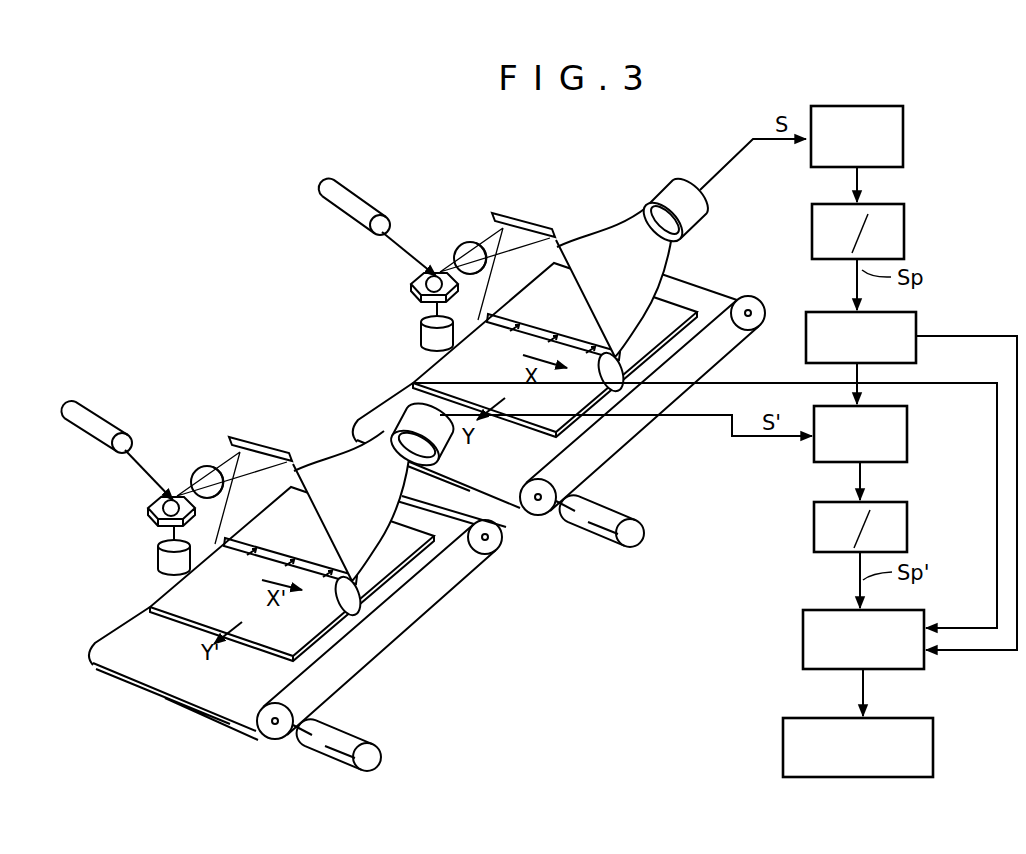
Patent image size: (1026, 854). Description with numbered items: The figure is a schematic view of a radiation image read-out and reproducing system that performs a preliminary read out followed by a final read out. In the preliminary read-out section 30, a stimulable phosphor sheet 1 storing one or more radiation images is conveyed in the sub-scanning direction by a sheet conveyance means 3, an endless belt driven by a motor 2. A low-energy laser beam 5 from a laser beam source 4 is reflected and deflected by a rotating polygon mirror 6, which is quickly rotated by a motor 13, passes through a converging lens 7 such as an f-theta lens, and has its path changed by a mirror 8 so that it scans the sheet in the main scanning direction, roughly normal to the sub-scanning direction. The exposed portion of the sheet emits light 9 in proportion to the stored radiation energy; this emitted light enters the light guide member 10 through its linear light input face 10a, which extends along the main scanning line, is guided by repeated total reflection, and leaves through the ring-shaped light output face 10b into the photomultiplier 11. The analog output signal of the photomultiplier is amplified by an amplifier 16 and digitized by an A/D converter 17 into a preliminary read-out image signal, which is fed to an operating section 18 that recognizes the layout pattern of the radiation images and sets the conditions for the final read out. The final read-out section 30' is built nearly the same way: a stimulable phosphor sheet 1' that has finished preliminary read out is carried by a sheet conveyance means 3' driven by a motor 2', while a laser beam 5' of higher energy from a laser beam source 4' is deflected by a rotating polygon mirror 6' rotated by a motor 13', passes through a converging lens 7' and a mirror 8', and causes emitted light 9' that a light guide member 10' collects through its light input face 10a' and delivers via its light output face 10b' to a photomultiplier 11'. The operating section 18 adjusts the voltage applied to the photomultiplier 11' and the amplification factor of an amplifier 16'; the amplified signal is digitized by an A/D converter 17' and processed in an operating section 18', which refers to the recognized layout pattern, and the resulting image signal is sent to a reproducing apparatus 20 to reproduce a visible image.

The stimulable phosphor sheet 1 is at (555, 359).
The motor 2 is at (609, 511).
The sheet conveyance means 3 is at (559, 390).
The laser beam source 4 is at (358, 200).
The laser beam 5 is at (409, 236).
The rotating polygon mirror 6 is at (413, 282).
The converging lens 7 is at (467, 230).
The mirror 8 is at (528, 210).
The emitted light 9 is at (551, 343).
The light guide member 10 is at (651, 299).
The light input face 10a is at (670, 379).
The light output face 10b is at (696, 223).
The photomultiplier 11 is at (696, 197).
The motor 13 is at (414, 326).
The amplifier 16 is at (862, 113).
The A/D converter 17 is at (887, 231).
The operating section 18 is at (884, 327).
The reproducing apparatus 20 is at (933, 735).
The preliminary read-out section 30 is at (495, 158).
The stimulable phosphor sheet 1' is at (292, 581).
The motor 2' is at (351, 736).
The sheet conveyance means 3' is at (295, 619).
The laser beam source 4' is at (104, 422).
The laser beam 5' is at (151, 461).
The rotating polygon mirror 6' is at (146, 501).
The converging lens 7' is at (208, 448).
The mirror 8' is at (262, 435).
The emitted light 9' is at (280, 572).
The light guide member 10' is at (386, 519).
The light input face 10a' is at (406, 608).
The light output face 10b' is at (456, 447).
The photomultiplier 11' is at (443, 418).
The motor 13' is at (145, 550).
The amplifier 16' is at (888, 434).
The A/D converter 17' is at (892, 527).
The operating section 18' is at (890, 627).
The final read-out section 30' is at (219, 378).